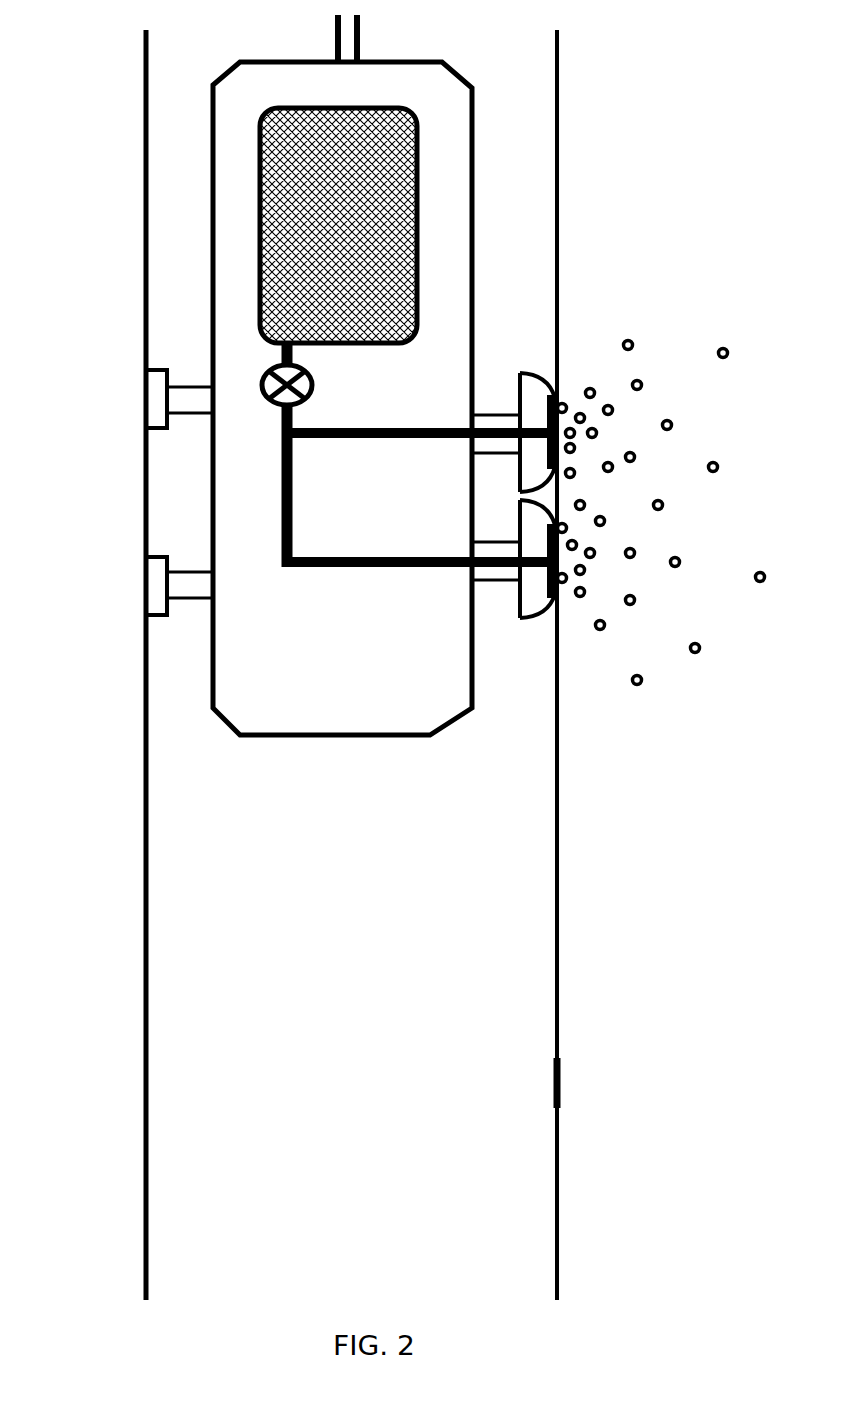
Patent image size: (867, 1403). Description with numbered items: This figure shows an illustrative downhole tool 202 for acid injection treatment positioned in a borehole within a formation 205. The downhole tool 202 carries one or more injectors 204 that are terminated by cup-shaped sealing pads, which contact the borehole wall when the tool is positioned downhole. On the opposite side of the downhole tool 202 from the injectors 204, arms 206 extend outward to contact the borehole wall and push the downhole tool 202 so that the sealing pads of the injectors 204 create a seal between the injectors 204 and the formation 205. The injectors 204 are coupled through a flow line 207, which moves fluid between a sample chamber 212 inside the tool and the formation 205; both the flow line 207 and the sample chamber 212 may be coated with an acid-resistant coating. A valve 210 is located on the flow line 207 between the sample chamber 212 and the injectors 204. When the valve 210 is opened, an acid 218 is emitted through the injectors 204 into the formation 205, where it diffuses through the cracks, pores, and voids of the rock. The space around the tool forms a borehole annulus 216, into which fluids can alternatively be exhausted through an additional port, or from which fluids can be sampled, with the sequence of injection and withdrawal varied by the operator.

The downhole tool 202 is at (395, 61).
The injectors 204 is at (515, 382).
The formation 205 is at (723, 406).
The arms 206 is at (168, 428).
The flow line 207 is at (337, 568).
The valve 210 is at (306, 397).
The sample chamber 212 is at (308, 108).
The borehole annulus 216 is at (548, 179).
The acid 218 is at (664, 506).